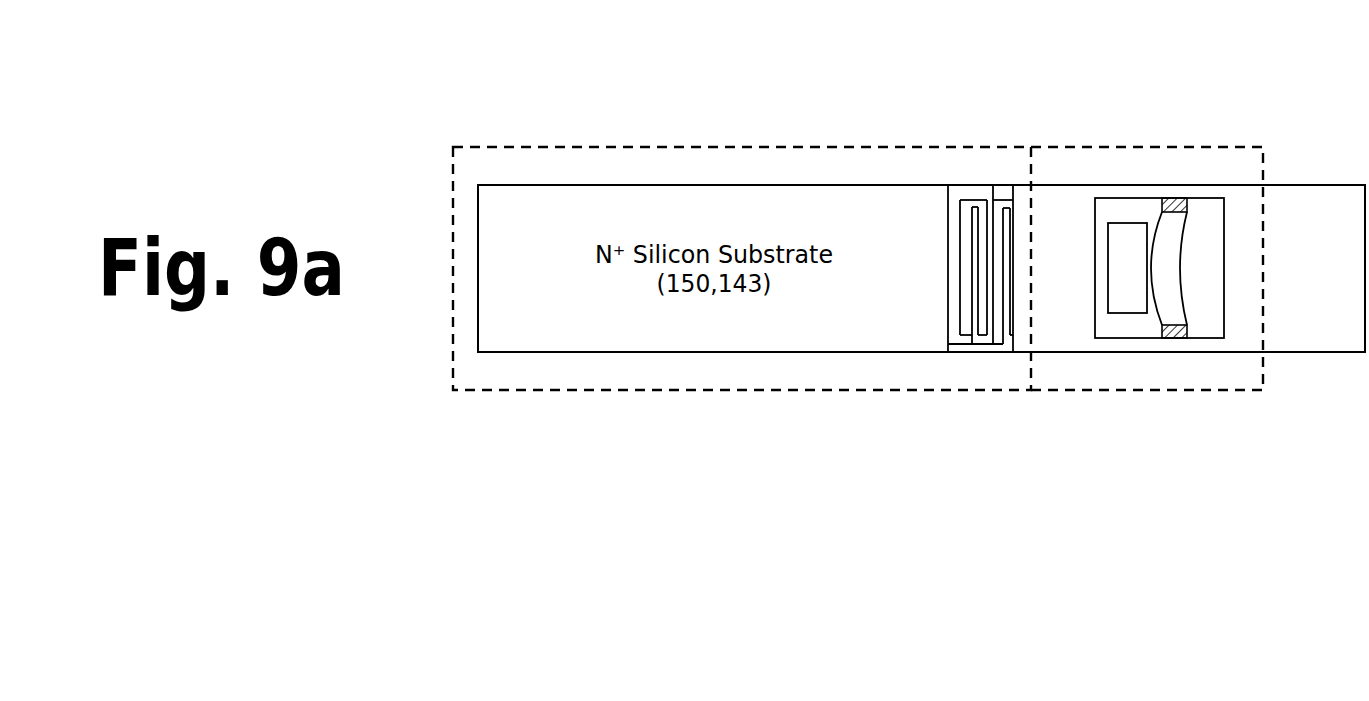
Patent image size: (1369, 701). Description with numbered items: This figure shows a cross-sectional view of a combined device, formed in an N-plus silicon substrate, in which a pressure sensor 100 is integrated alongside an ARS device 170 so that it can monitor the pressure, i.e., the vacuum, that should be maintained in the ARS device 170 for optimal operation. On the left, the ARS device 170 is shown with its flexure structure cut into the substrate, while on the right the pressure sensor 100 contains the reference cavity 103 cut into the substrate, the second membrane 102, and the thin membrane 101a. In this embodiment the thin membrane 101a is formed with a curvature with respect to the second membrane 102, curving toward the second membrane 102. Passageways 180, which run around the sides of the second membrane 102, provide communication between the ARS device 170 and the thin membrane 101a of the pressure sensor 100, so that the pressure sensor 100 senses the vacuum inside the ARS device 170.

The ARS device 170 is at (742, 288).
The pressure sensor 100 is at (1147, 287).
The passageways 180 is at (1122, 333).
The second membrane 102 is at (1133, 233).
The thin membrane 101a is at (1170, 200).
The reference cavity 103 is at (1200, 254).